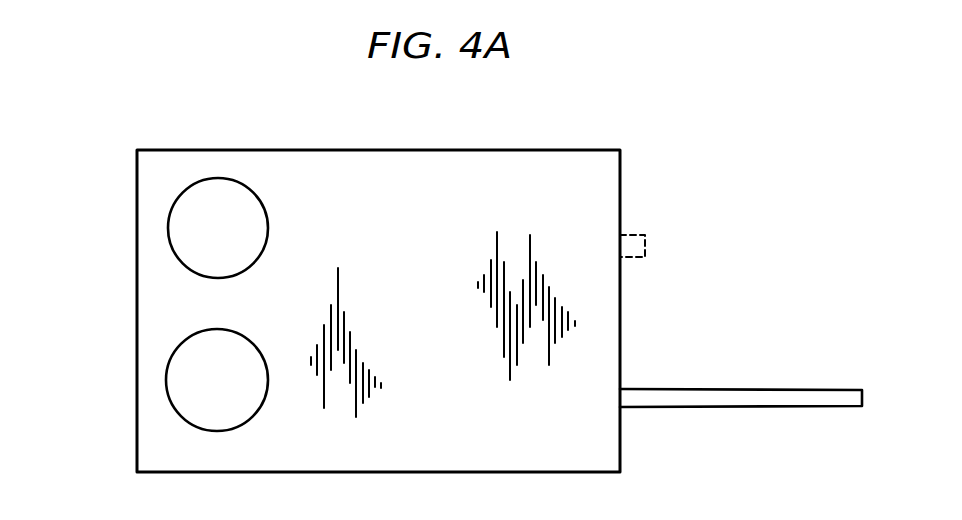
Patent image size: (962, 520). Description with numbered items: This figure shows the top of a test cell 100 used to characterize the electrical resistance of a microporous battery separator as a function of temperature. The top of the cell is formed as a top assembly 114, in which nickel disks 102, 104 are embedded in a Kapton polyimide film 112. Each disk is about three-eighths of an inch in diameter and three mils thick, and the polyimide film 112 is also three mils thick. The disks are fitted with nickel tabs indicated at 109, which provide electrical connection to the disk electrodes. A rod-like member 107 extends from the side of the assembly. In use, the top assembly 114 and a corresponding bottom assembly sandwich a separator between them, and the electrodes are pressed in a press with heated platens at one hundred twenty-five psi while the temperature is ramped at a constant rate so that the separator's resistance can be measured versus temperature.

The cell 100 is at (806, 264).
The nickel disk 102 is at (217, 222).
The nickel disk 104 is at (193, 396).
The antenna / rod 107 is at (763, 408).
The nickel tabs 109 is at (645, 248).
The polyimide film 112 is at (542, 172).
The top assembly 114 is at (598, 326).